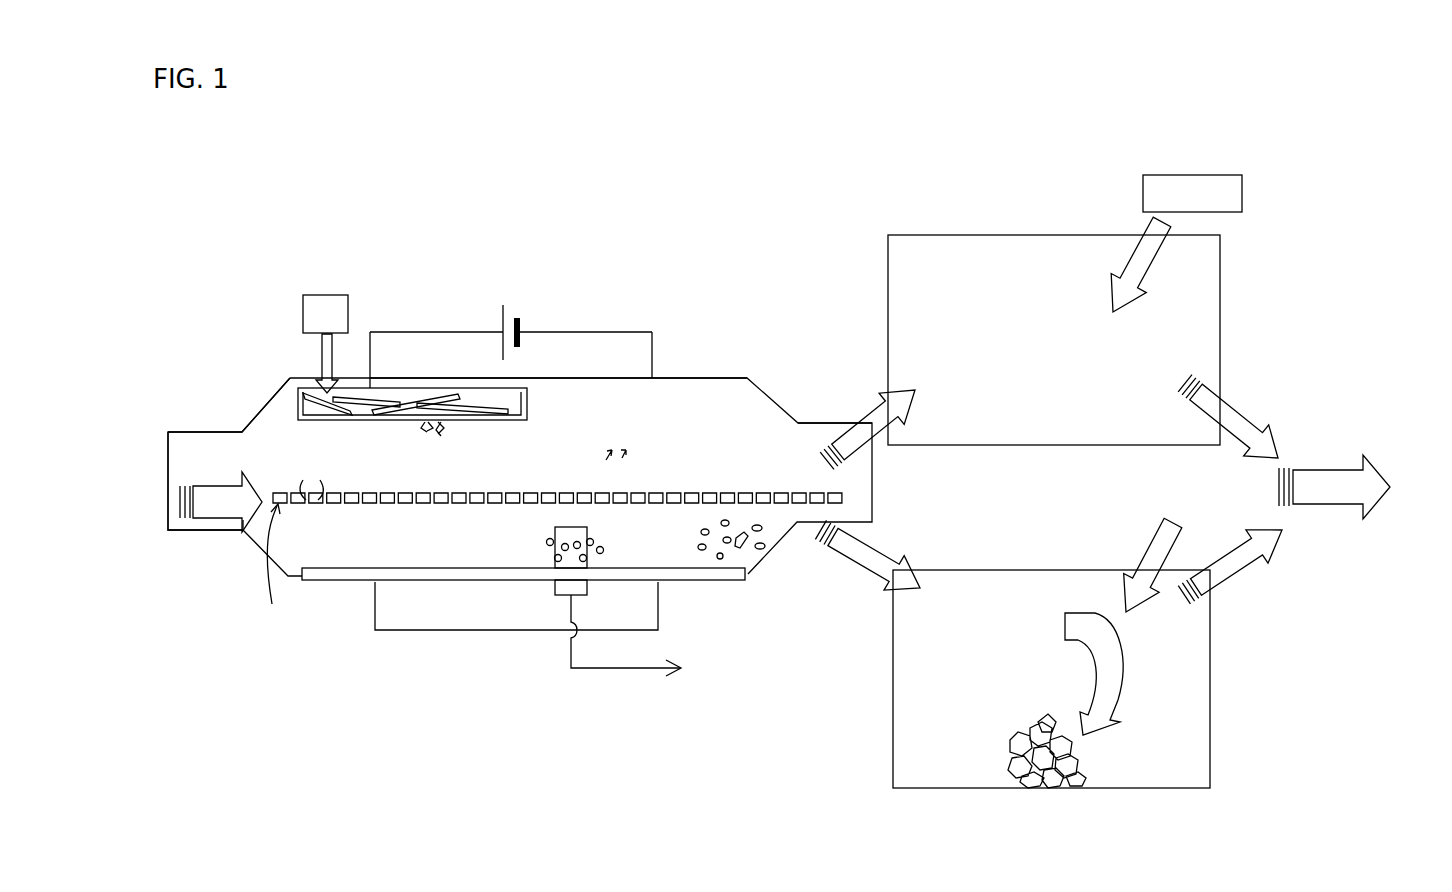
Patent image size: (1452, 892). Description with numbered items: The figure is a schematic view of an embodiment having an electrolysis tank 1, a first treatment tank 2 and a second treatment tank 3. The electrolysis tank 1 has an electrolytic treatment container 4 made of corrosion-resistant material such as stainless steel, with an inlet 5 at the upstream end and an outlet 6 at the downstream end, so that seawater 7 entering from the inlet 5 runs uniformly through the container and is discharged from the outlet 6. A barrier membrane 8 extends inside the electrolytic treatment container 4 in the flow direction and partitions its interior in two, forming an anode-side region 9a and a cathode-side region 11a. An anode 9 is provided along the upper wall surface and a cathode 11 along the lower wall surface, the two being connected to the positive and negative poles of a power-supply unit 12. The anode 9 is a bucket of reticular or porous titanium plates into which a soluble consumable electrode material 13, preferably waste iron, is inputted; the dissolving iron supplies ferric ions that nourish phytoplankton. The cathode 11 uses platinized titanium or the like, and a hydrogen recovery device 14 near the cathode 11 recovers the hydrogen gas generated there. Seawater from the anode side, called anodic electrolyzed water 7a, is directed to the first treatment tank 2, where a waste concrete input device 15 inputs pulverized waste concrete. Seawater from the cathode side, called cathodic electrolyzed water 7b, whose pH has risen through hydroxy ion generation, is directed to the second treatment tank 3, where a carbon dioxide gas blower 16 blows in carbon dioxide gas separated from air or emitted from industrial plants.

The electrolysis tank 1 is at (719, 376).
The first treatment tank 2 is at (1125, 293).
The second treatment tank 3 is at (1141, 621).
The electrolytic treatment container 4 is at (595, 377).
The inlet 5 is at (210, 431).
The outlet 6 is at (826, 422).
The seawater 7 is at (223, 531).
The anodic electrolyzed water 7a is at (877, 436).
The cathodic electrolyzed water 7b is at (883, 552).
The barrier membrane 8 is at (737, 490).
The anode 9 is at (522, 403).
The anode-side region 9a is at (491, 453).
The cathode 11 is at (441, 581).
The cathode-side region 11a is at (533, 535).
The power-supply unit 12 is at (512, 301).
The consumable electrode material 13 is at (443, 393).
The hydrogen recovery device 14 is at (552, 546).
The waste concrete input device 15 is at (1130, 222).
The carbon dioxide gas blower 16 is at (1143, 548).